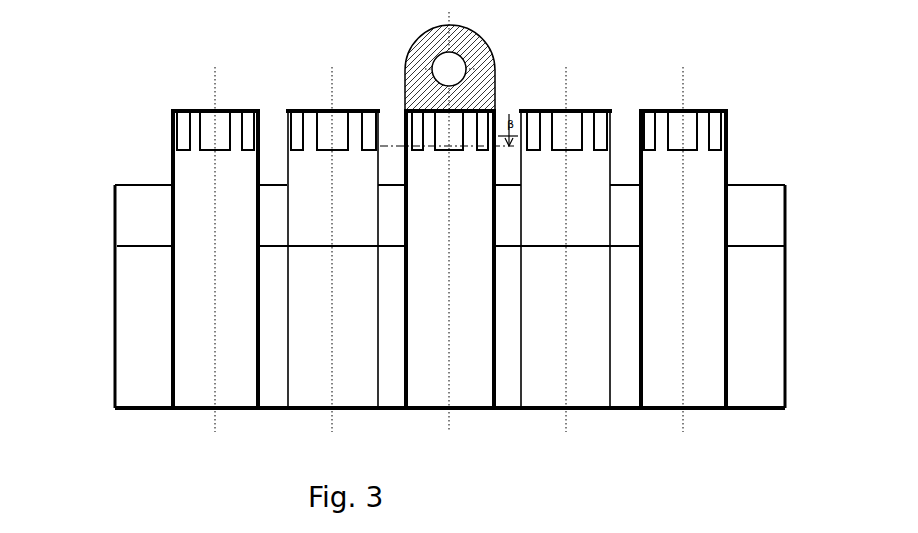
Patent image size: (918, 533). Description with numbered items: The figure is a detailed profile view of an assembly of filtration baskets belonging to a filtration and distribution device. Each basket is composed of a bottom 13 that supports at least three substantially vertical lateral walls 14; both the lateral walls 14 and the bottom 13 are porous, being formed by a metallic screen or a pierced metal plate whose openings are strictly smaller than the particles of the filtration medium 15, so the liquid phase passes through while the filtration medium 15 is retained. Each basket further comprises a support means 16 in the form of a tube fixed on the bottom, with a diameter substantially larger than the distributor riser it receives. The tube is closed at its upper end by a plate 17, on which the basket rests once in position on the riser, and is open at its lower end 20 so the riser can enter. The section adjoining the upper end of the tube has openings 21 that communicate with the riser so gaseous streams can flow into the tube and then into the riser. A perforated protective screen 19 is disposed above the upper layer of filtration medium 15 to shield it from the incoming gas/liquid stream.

The bottom 13 is at (510, 408).
The lateral walls 14 is at (113, 265).
The filtration medium 15 is at (758, 337).
The support means 16 is at (728, 157).
The plate 17 is at (695, 109).
The perforated protective screen 19 is at (143, 247).
The lower end 20 is at (692, 408).
The openings 21 is at (335, 118).